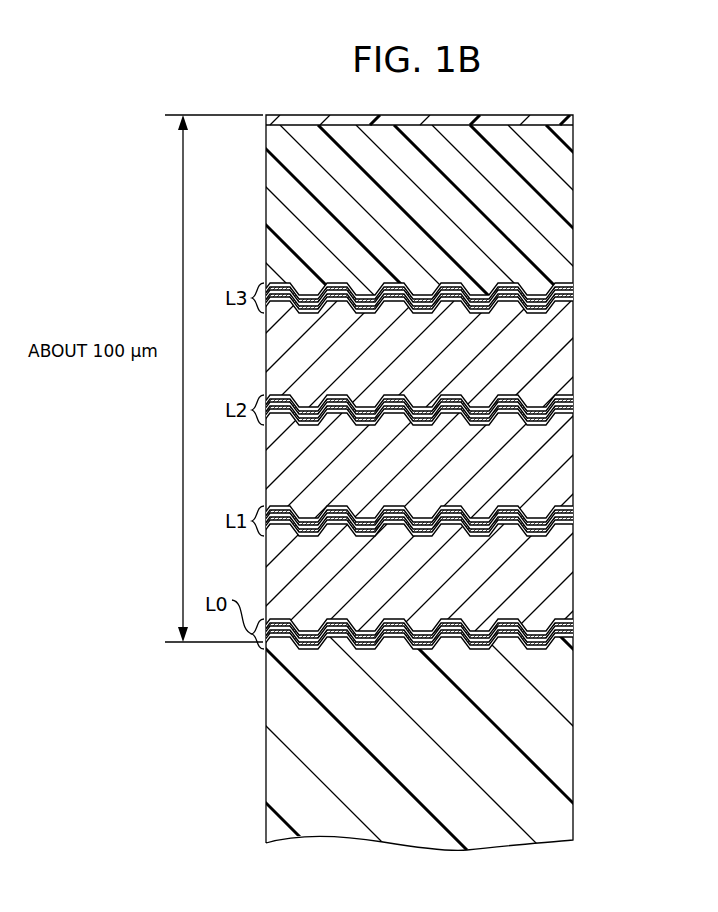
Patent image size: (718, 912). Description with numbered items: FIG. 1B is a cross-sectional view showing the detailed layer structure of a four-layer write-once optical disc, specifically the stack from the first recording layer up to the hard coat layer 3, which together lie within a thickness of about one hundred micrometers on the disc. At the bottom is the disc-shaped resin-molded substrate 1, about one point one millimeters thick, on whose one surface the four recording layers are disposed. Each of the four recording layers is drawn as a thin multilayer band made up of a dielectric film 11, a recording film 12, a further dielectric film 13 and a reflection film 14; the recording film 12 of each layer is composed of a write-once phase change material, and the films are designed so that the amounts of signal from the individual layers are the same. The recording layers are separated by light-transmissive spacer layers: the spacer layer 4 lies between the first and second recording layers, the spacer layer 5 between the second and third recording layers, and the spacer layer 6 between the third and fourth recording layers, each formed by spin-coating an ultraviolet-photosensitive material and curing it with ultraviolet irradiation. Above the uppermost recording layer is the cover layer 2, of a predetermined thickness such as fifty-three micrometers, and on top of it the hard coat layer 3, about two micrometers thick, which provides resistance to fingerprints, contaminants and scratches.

The resin-molded substrate 1 is at (573, 740).
The cover layer 2 is at (573, 160).
The hard coat layer 3 is at (573, 120).
The spacer layer 4 is at (573, 545).
The spacer layer 5 is at (573, 434).
The spacer layer 6 is at (573, 322).
The dielectric film 11 is at (573, 288).
The recording film 12 is at (573, 292).
The dielectric film 13 is at (573, 297).
The reflection film 14 is at (573, 302).